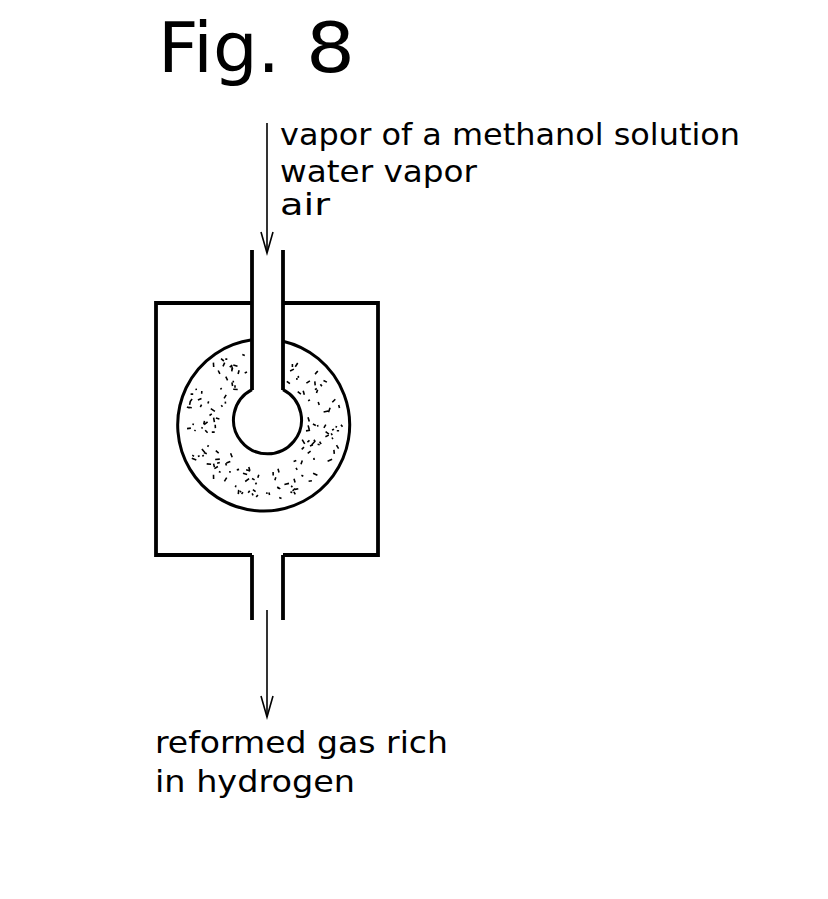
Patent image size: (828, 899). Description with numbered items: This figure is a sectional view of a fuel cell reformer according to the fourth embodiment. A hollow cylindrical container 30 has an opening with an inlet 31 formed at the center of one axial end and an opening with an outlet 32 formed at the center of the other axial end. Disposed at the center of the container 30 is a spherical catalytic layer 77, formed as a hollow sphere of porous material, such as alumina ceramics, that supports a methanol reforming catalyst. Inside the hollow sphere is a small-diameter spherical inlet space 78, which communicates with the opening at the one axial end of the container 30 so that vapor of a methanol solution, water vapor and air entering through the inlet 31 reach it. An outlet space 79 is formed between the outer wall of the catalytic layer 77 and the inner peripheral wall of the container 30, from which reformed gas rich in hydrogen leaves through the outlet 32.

The container 30 is at (378, 486).
The inlet 31 is at (283, 278).
The outlet 32 is at (285, 592).
The spherical catalytic layer 77 is at (333, 393).
The inlet space 78 is at (263, 421).
The outlet space 79 is at (187, 515).